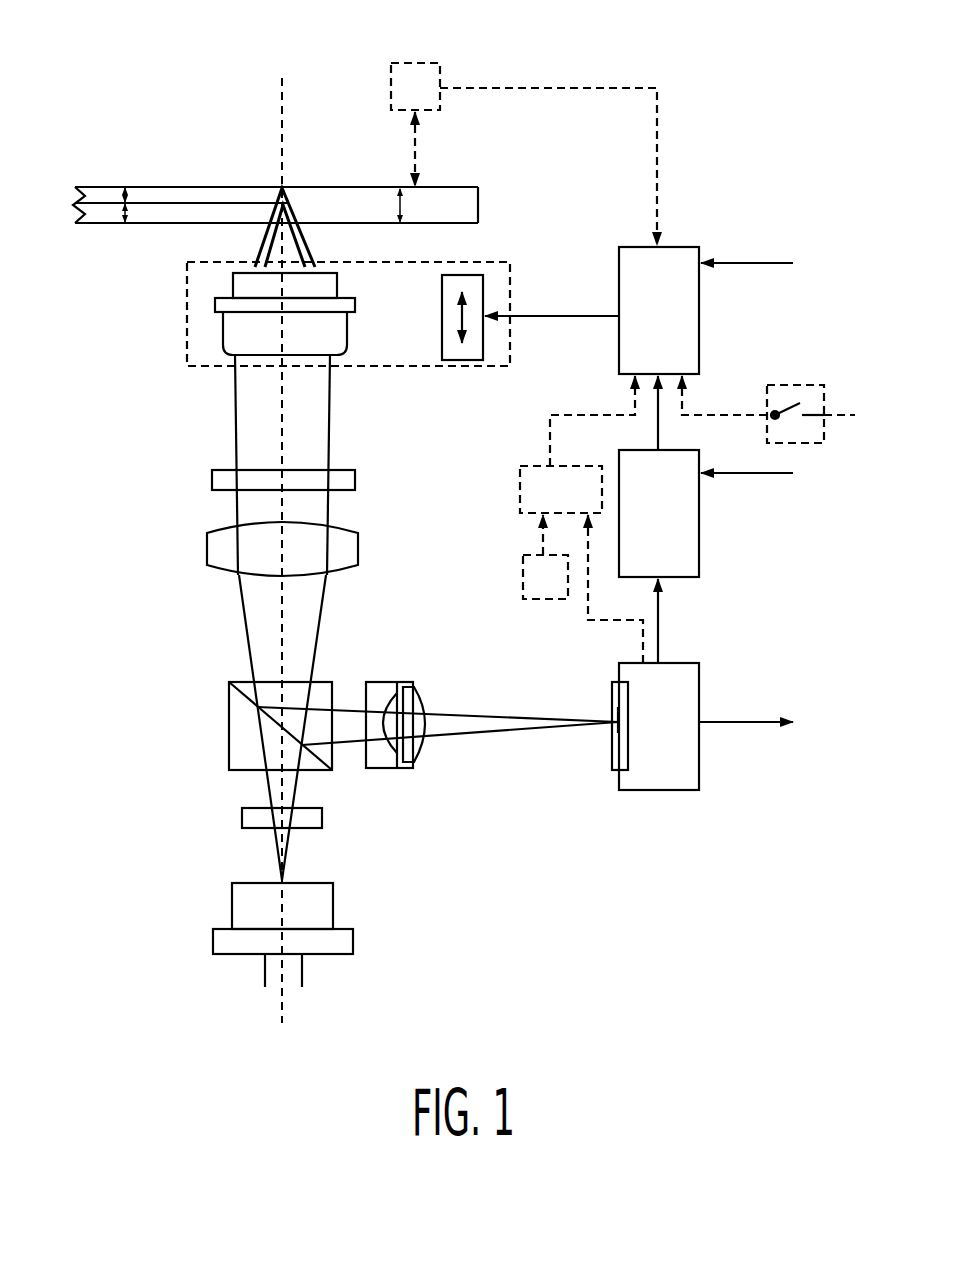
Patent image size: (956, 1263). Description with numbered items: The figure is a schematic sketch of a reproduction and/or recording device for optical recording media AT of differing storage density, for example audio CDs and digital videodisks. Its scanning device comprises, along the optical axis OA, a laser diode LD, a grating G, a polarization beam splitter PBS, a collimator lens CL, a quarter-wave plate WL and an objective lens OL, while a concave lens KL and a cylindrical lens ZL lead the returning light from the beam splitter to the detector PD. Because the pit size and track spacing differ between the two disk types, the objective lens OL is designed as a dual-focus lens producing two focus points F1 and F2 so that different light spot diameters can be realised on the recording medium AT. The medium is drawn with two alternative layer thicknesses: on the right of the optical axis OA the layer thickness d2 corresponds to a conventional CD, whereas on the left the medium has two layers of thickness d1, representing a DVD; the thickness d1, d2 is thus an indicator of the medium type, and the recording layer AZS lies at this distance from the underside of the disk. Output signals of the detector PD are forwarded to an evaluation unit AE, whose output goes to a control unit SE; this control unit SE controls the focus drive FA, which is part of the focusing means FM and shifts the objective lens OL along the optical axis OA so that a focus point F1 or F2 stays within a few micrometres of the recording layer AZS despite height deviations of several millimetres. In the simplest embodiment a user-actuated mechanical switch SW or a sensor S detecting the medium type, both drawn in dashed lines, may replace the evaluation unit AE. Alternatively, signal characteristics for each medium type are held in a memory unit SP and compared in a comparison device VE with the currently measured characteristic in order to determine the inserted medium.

The optical axis OA is at (287, 100).
The optical recording medium AT is at (470, 213).
The recording layer AZS is at (108, 207).
The layer thickness d1 is at (128, 190).
The layer thickness d2 is at (402, 207).
The focus point F1 is at (290, 205).
The focus point F2 is at (284, 186).
The sensor S is at (416, 72).
The focusing means FM is at (512, 290).
The focus drive FA is at (470, 360).
The objective lens OL is at (347, 330).
The quarter-wave plate WL is at (355, 480).
The collimator lens CL is at (358, 545).
The polarization beam splitter PBS is at (229, 733).
The concave lens KL is at (383, 770).
The cylindrical lens ZL is at (405, 683).
The grating G is at (242, 822).
The laser diode LD is at (353, 946).
The detector PD is at (612, 745).
The control unit SE is at (699, 325).
The evaluation unit AE is at (699, 523).
The mechanical switch SW is at (818, 395).
The comparison device VE is at (520, 497).
The memory unit SP is at (523, 588).